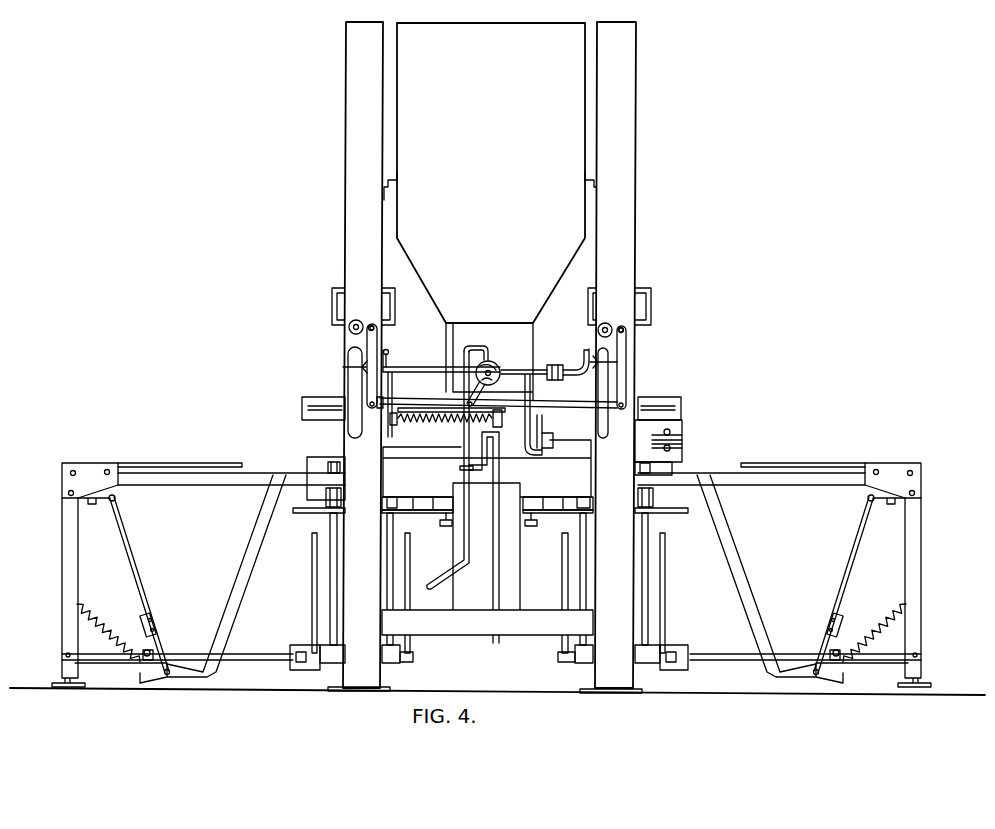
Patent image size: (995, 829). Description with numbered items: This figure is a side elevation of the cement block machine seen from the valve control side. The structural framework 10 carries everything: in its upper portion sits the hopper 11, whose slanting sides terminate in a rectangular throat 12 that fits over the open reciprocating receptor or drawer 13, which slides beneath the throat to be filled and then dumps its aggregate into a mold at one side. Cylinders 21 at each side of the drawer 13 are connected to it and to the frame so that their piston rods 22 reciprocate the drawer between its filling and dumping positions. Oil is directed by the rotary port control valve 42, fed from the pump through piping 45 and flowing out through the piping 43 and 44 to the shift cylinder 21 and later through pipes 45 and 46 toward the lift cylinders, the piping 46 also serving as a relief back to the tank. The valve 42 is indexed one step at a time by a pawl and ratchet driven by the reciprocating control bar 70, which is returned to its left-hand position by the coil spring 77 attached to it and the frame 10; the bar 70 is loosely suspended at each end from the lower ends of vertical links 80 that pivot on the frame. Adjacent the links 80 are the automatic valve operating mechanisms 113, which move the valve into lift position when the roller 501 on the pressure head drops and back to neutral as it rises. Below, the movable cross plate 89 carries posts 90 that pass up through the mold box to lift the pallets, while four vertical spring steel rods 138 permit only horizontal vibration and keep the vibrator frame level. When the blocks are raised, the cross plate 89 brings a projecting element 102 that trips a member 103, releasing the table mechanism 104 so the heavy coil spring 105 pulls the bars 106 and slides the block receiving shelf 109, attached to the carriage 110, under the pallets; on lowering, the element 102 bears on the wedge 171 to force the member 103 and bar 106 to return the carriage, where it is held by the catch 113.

The framework 10 is at (347, 232).
The hopper 11 is at (497, 151).
The throat 12 is at (449, 347).
The receptor or drawer 13 is at (668, 470).
The cylinder 21 is at (540, 432).
The piston rod 22 is at (586, 441).
The rotary port control valve 42 is at (501, 366).
The piping 43 is at (407, 369).
The piping 44 is at (530, 366).
The piping 45 is at (388, 350).
The piping 46 is at (578, 371).
The control bar 70 is at (430, 398).
The coil spring 77 is at (442, 423).
The vertical link 80 is at (366, 341).
The cross plate 89 is at (420, 652).
The post 90 is at (312, 565).
The projecting element 102 is at (272, 636).
The member 103 is at (128, 536).
The table mechanism 104 is at (76, 479).
The coil spring 105 is at (115, 583).
The bar 106 is at (92, 505).
The block receiving shelf 109 is at (142, 462).
The carriage 110 is at (66, 495).
The catch 113 is at (358, 364).
The vertical spring steel rod 138 is at (327, 530).
The wedge 171 is at (157, 617).
The roller 501 is at (352, 325).